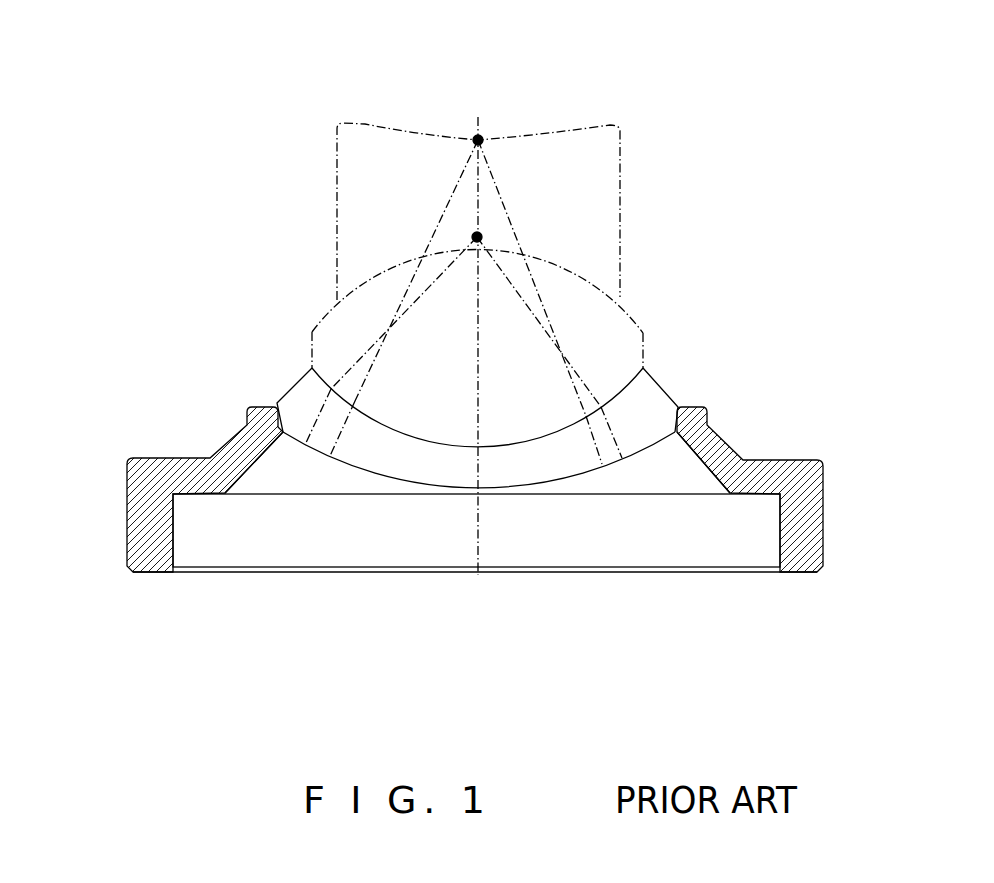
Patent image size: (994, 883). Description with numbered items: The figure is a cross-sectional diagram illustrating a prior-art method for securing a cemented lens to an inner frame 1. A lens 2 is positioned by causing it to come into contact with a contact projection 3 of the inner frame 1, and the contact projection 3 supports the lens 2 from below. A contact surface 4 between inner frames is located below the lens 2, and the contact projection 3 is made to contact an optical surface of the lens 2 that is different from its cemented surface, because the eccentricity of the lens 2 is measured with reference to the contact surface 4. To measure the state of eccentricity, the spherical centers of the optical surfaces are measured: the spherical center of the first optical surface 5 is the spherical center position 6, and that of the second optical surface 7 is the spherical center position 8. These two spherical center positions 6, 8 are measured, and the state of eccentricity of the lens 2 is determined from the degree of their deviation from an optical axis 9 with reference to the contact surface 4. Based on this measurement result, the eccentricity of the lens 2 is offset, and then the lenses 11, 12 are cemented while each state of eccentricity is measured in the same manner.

The inner frame 1 is at (716, 453).
The lens 2 is at (509, 454).
The contact projection 3 is at (285, 432).
The contact surface 4 is at (152, 574).
The first optical surface 5 is at (375, 473).
The spherical center position 6 is at (479, 137).
The second optical surface 7 is at (628, 381).
The spherical center position 8 is at (479, 235).
The optical axis 9 is at (474, 540).
The lens 11 is at (570, 313).
The lens 12 is at (583, 145).